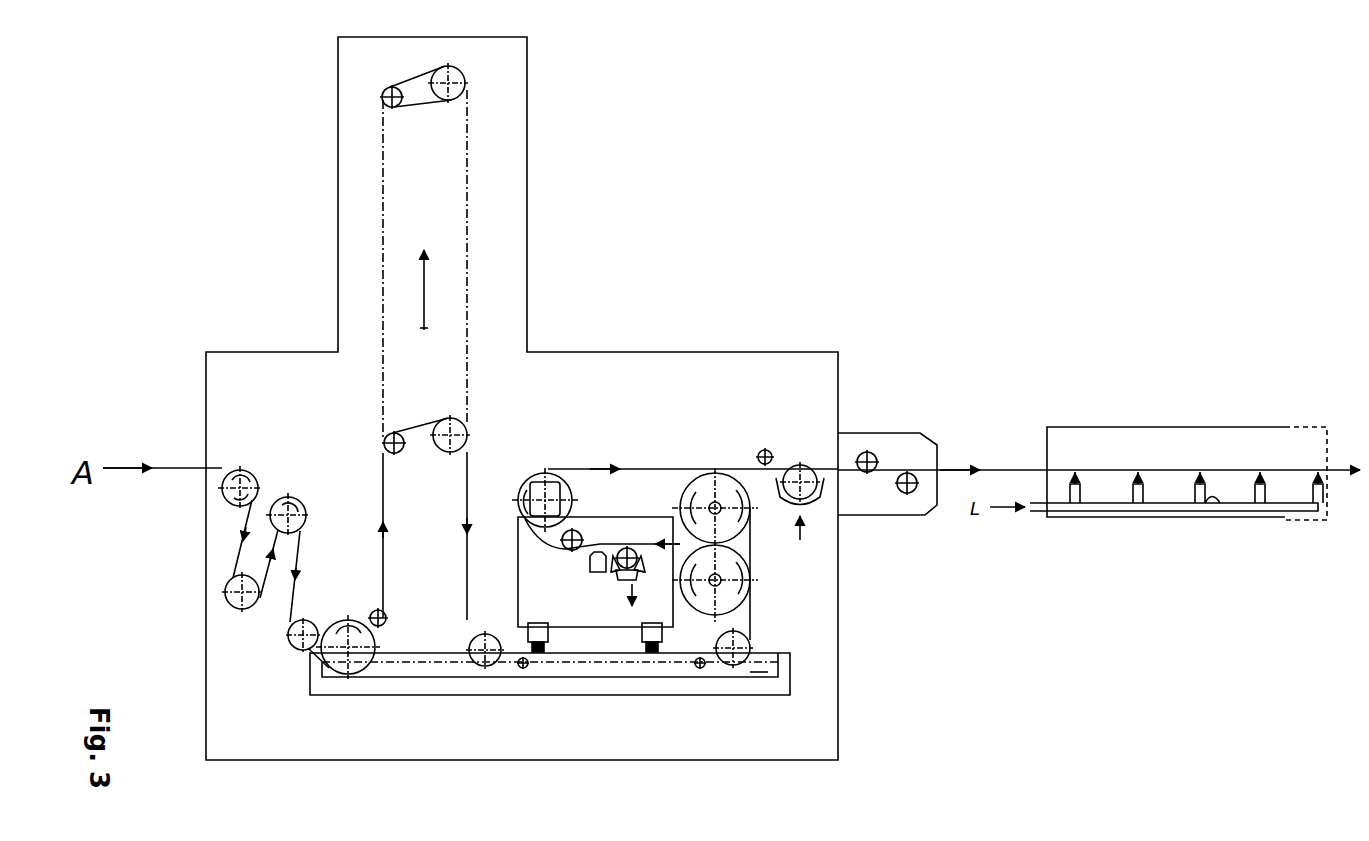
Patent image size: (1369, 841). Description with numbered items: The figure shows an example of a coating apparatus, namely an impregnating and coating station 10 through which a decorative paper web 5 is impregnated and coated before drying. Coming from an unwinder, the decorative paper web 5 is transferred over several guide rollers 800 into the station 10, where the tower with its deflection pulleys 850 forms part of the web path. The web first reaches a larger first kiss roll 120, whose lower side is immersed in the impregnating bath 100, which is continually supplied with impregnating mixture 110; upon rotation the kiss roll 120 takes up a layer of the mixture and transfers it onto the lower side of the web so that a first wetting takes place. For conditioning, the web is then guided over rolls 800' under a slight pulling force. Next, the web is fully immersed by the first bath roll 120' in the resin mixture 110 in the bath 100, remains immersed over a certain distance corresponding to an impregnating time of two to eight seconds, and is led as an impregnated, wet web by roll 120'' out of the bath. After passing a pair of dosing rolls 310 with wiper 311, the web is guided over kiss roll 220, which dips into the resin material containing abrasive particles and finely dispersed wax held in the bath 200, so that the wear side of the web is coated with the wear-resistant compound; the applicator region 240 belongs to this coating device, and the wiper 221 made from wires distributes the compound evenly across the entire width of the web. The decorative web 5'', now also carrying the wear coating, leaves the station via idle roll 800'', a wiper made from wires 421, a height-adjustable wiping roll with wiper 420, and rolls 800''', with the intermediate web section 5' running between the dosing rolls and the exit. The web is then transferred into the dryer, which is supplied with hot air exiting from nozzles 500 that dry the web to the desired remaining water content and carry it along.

The impregnating and coating station 10 is at (370, 302).
The deflection pulleys 850 is at (438, 91).
The guide rollers 800 is at (213, 567).
The rolls 800' is at (426, 464).
The idle roll 800'' is at (545, 471).
The rolls 800''' is at (887, 422).
The impregnating bath 100 is at (783, 690).
The impregnating mixture 110 is at (750, 675).
The first kiss roll 120 is at (352, 673).
The first bath roll 120' is at (474, 684).
The roll 120'' is at (819, 588).
The bath 200 is at (627, 582).
The kiss roll 220 is at (618, 578).
The wiper 221 is at (592, 567).
The applicator 240 is at (638, 576).
The dosing rolls 310 is at (713, 502).
The wiper 311 is at (733, 488).
The wiping roll with wiper 420 is at (806, 474).
The wiper made from wires 421 is at (766, 450).
The nozzles 500 is at (1222, 500).
The decorative paper web 5 is at (285, 531).
The web section 5' is at (719, 580).
The decorative web 5'' is at (942, 497).